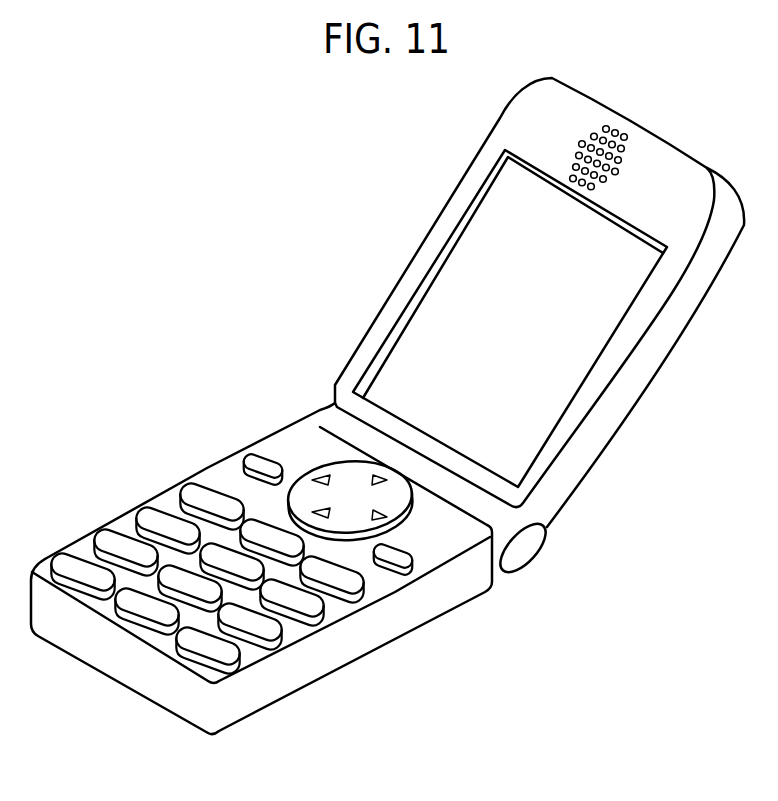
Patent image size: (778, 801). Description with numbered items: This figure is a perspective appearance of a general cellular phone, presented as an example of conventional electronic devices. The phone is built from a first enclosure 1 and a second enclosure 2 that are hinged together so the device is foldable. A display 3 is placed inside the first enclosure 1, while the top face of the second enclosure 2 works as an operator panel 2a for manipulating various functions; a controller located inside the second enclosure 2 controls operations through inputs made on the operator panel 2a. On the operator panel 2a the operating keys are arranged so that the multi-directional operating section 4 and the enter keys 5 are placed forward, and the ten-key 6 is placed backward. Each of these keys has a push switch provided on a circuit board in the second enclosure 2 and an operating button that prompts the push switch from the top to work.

The first enclosure 1 is at (420, 247).
The second enclosure 2 is at (228, 465).
The operator panel 2a is at (292, 448).
The display 3 is at (595, 338).
The multi-directional operating section (key) 4 is at (402, 505).
The enter keys 5 is at (412, 558).
The ten-key 6 is at (320, 608).